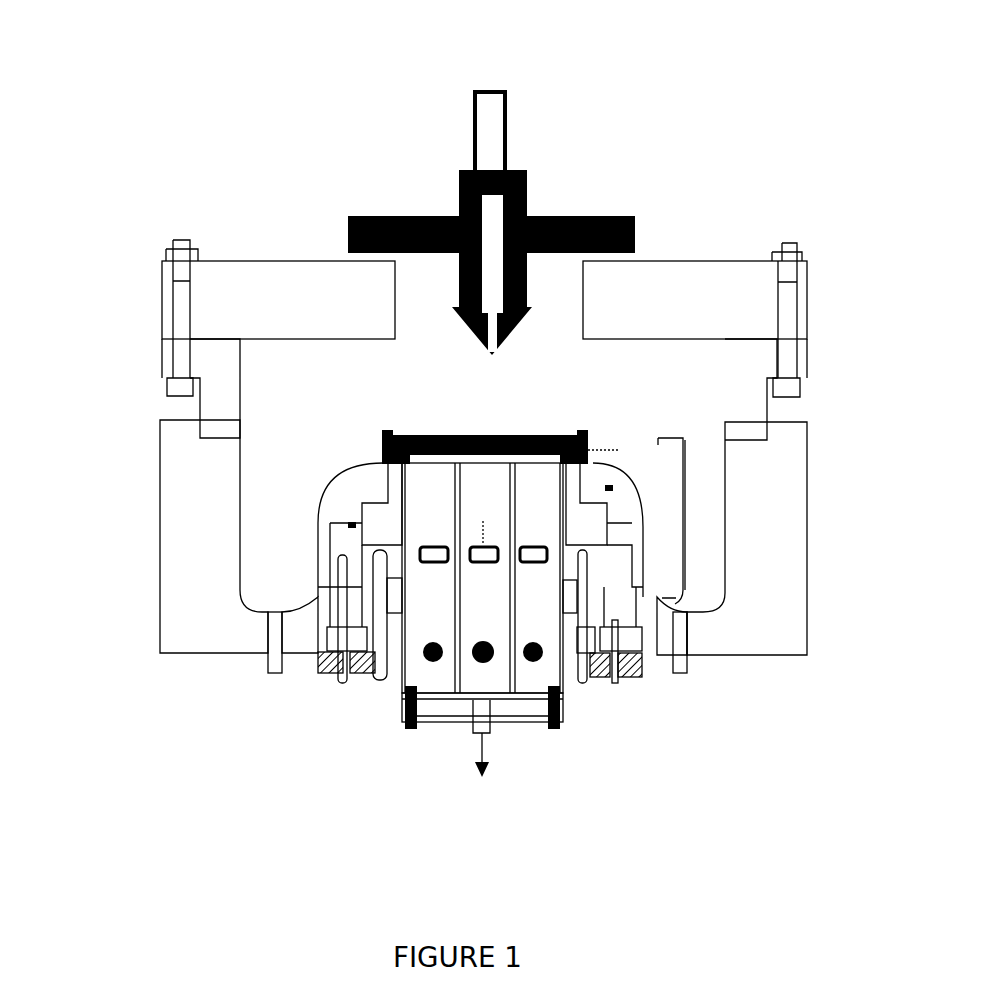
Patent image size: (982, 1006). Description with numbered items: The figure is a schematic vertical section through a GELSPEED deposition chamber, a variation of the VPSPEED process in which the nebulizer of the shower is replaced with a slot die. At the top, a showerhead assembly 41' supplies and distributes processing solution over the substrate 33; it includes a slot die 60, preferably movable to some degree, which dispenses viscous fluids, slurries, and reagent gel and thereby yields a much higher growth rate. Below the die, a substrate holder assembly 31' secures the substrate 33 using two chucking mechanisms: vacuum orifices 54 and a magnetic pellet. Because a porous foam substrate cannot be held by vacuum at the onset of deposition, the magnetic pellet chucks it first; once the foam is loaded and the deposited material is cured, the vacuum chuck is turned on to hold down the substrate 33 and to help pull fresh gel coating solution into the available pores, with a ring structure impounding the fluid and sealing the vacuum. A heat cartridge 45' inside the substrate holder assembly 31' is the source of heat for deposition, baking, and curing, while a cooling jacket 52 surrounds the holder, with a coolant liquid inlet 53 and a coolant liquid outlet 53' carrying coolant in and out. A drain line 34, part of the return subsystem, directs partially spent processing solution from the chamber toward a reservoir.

The showerhead assembly 41' is at (423, 350).
The slot die 60 is at (565, 215).
The substrate 33 is at (448, 422).
The vacuum orifices 54 is at (441, 470).
The substrate holder assembly 31' is at (768, 521).
The cooling jacket 52 is at (648, 565).
The drain line 34 is at (263, 686).
The coolant liquid inlet 53 is at (323, 635).
The coolant liquid outlet 53' is at (620, 638).
The heat cartridge 45' is at (454, 631).